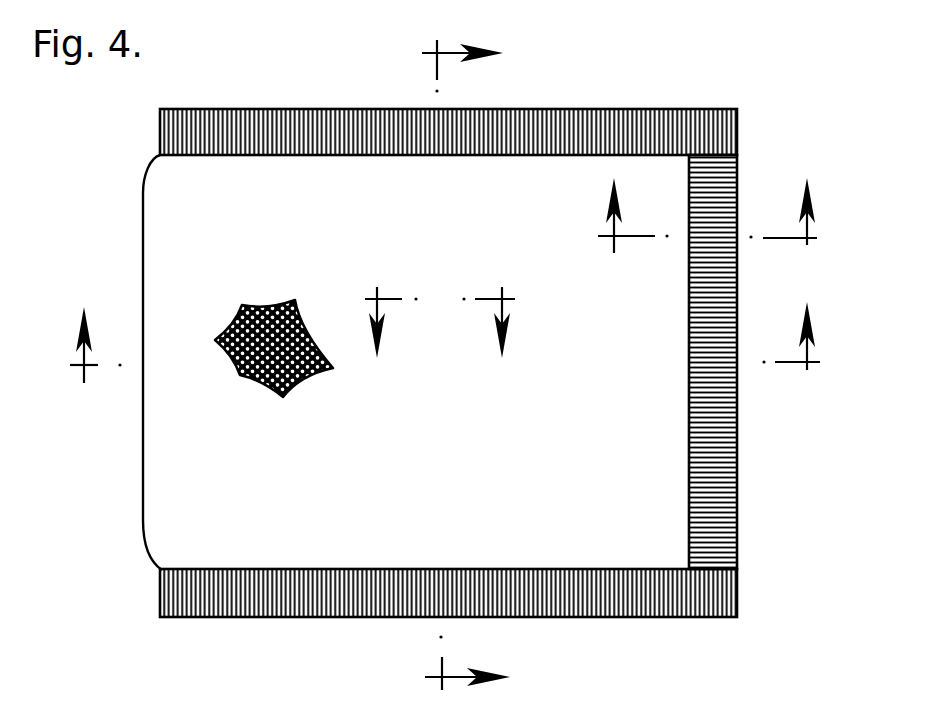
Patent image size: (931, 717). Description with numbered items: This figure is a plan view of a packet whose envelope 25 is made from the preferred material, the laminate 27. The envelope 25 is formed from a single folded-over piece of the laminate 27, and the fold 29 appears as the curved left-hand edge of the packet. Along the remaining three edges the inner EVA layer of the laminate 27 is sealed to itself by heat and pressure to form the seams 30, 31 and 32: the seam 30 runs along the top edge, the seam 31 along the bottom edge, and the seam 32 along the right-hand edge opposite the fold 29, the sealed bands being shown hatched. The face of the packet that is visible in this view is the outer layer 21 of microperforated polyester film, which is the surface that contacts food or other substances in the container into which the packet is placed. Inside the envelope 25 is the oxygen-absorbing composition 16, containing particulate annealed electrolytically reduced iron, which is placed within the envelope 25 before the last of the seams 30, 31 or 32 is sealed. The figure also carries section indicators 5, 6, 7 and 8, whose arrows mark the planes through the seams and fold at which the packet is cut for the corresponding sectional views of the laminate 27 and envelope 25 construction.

The oxygen-absorbing composition 16 is at (274, 303).
The outer layer of microperforated polyester film 21 is at (450, 467).
The envelope 25 is at (143, 192).
The laminate 27 is at (168, 498).
The fold 29 is at (143, 240).
The seam 30 is at (625, 120).
The seam 31 is at (591, 578).
The seam 32 is at (716, 484).
The section line 5- 5 is at (440, 305).
The section line 6- 6 is at (453, 366).
The section line 7- 7 is at (445, 362).
The section line 8- 8 is at (708, 231).